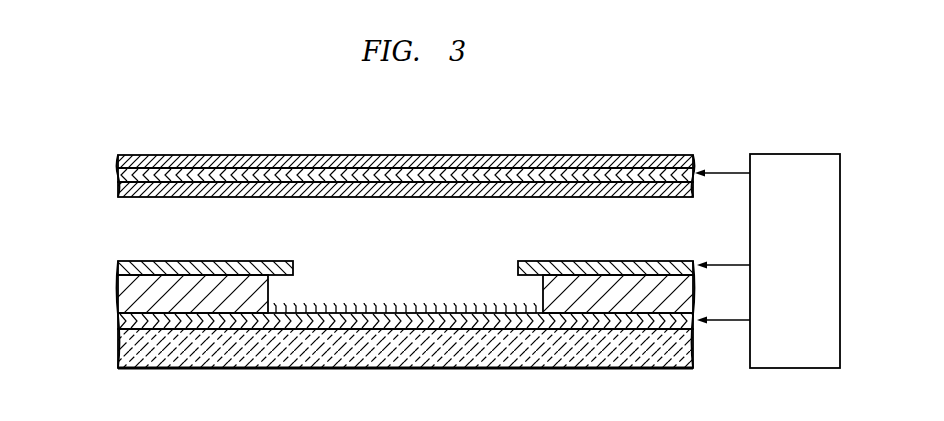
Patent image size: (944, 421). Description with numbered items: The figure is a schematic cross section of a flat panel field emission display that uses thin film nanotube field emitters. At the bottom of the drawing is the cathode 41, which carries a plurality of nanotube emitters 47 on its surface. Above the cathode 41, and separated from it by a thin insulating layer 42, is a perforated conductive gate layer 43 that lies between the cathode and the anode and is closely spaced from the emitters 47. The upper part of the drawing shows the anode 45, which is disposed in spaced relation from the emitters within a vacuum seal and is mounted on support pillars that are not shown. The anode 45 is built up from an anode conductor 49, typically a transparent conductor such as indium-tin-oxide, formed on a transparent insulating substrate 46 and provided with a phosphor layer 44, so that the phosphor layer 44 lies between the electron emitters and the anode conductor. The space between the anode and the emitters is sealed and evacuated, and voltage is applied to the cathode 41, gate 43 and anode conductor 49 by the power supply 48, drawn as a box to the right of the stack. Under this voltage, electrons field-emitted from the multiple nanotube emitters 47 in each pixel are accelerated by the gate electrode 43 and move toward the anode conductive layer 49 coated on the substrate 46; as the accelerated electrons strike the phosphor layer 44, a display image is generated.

The cathode 41 is at (117, 325).
The insulating layer 42 is at (117, 288).
The gate layer 43 is at (217, 261).
The phosphor layer 44 is at (356, 197).
The anode 45 is at (359, 176).
The transparent insulating substrate 46 is at (258, 155).
The nanotube emitters 47 is at (415, 302).
The power supply 48 is at (793, 154).
The anode conductor 49 is at (118, 178).